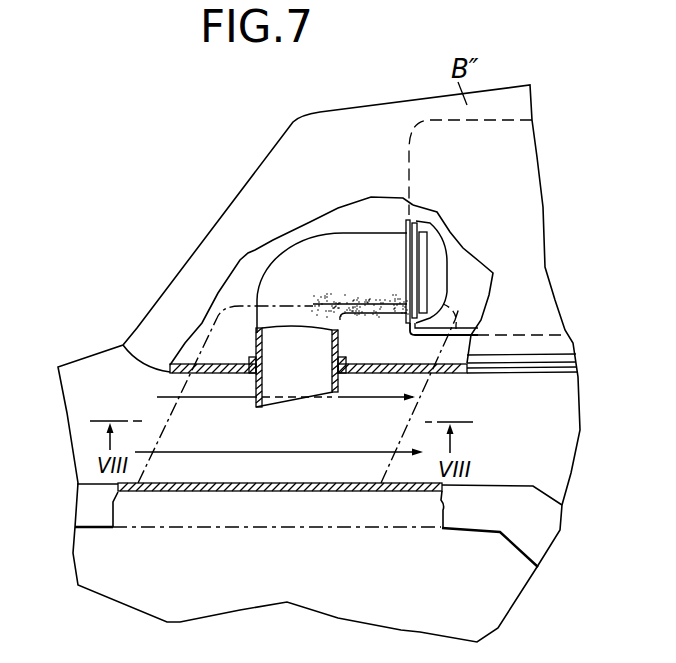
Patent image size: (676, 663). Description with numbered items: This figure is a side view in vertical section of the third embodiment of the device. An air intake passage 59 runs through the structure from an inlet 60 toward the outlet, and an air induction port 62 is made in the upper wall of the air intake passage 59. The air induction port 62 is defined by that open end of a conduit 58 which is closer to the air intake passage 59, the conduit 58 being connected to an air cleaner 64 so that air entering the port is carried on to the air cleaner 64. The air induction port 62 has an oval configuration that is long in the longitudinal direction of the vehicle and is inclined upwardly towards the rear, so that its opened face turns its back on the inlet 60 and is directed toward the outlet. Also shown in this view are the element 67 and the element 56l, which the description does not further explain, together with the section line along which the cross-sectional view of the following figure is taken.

The conduit 58 is at (340, 316).
The air intake passage 59 is at (239, 447).
The inlet 60 is at (173, 425).
The air induction port 62 is at (310, 398).
The air cleaner 64 is at (465, 318).
The side panel 67 is at (420, 385).
The lower plate 56l is at (258, 492).